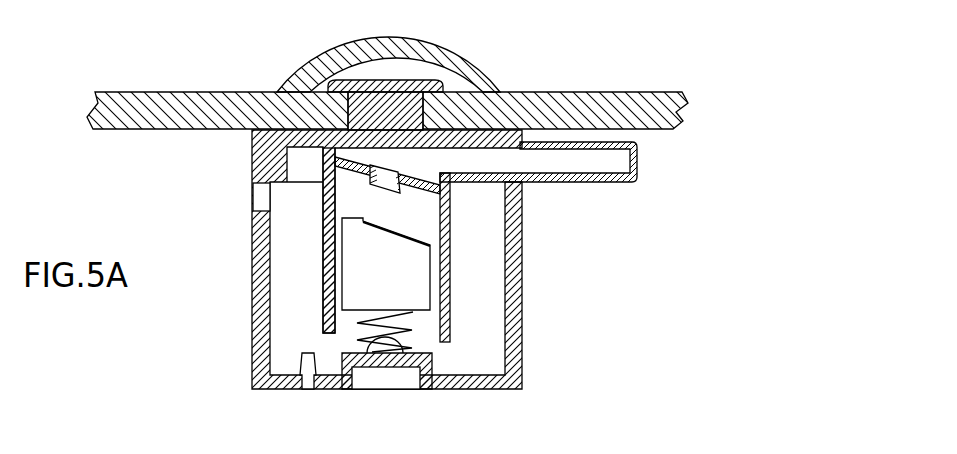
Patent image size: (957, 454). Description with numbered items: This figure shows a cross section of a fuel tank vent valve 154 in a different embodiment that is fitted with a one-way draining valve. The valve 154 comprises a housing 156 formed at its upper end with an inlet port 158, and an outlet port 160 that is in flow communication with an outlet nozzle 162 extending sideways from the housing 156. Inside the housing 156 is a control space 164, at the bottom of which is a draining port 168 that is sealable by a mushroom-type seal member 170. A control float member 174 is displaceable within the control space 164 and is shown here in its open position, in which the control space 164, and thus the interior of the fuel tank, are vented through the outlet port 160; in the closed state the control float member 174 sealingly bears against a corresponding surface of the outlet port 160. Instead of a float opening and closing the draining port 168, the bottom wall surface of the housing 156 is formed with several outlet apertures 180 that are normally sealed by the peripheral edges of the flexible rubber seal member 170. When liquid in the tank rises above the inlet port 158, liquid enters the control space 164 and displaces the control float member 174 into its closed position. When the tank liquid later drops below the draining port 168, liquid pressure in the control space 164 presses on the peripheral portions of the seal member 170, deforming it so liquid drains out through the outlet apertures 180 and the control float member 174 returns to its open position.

The valve 154 is at (606, 275).
The housing 156 is at (522, 225).
The inlet port 158 is at (255, 197).
The outlet port 160 is at (392, 177).
The outlet nozzle 162 is at (577, 183).
The control space 164 is at (485, 303).
The draining port 168 is at (296, 341).
The mushroom-type seal member 170 is at (280, 389).
The control float member 174 is at (351, 260).
The outlet apertures 180 is at (297, 374).